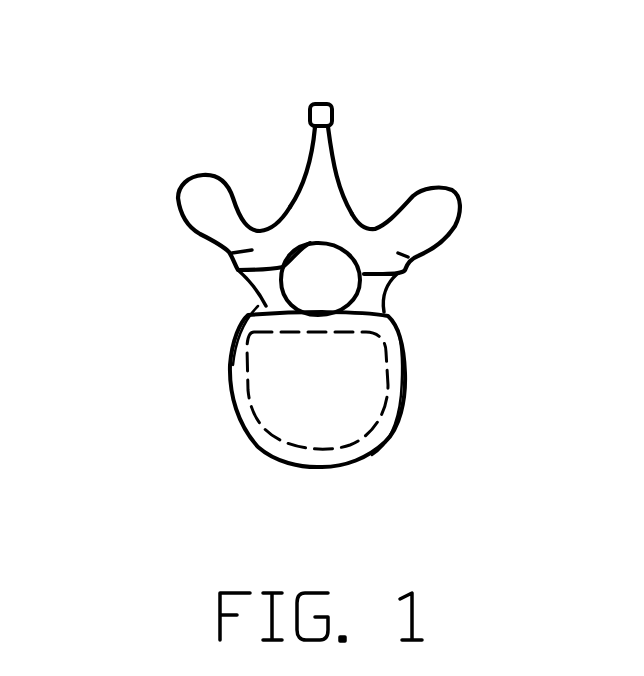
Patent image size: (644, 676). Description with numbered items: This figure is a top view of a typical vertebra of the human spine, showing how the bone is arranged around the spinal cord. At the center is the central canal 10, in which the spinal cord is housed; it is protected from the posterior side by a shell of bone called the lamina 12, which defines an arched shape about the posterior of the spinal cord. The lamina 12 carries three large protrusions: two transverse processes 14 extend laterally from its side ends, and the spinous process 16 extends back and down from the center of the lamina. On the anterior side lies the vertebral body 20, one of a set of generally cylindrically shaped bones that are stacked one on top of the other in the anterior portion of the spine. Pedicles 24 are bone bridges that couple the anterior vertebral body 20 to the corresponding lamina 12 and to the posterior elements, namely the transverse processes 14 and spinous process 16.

The lamina 12 is at (420, 68).
The spinous process 16 is at (322, 103).
The transverse processes 14 is at (188, 175).
The central canal 10 is at (340, 297).
The pedicles 24 is at (262, 292).
The vertebral body 20 is at (343, 392).